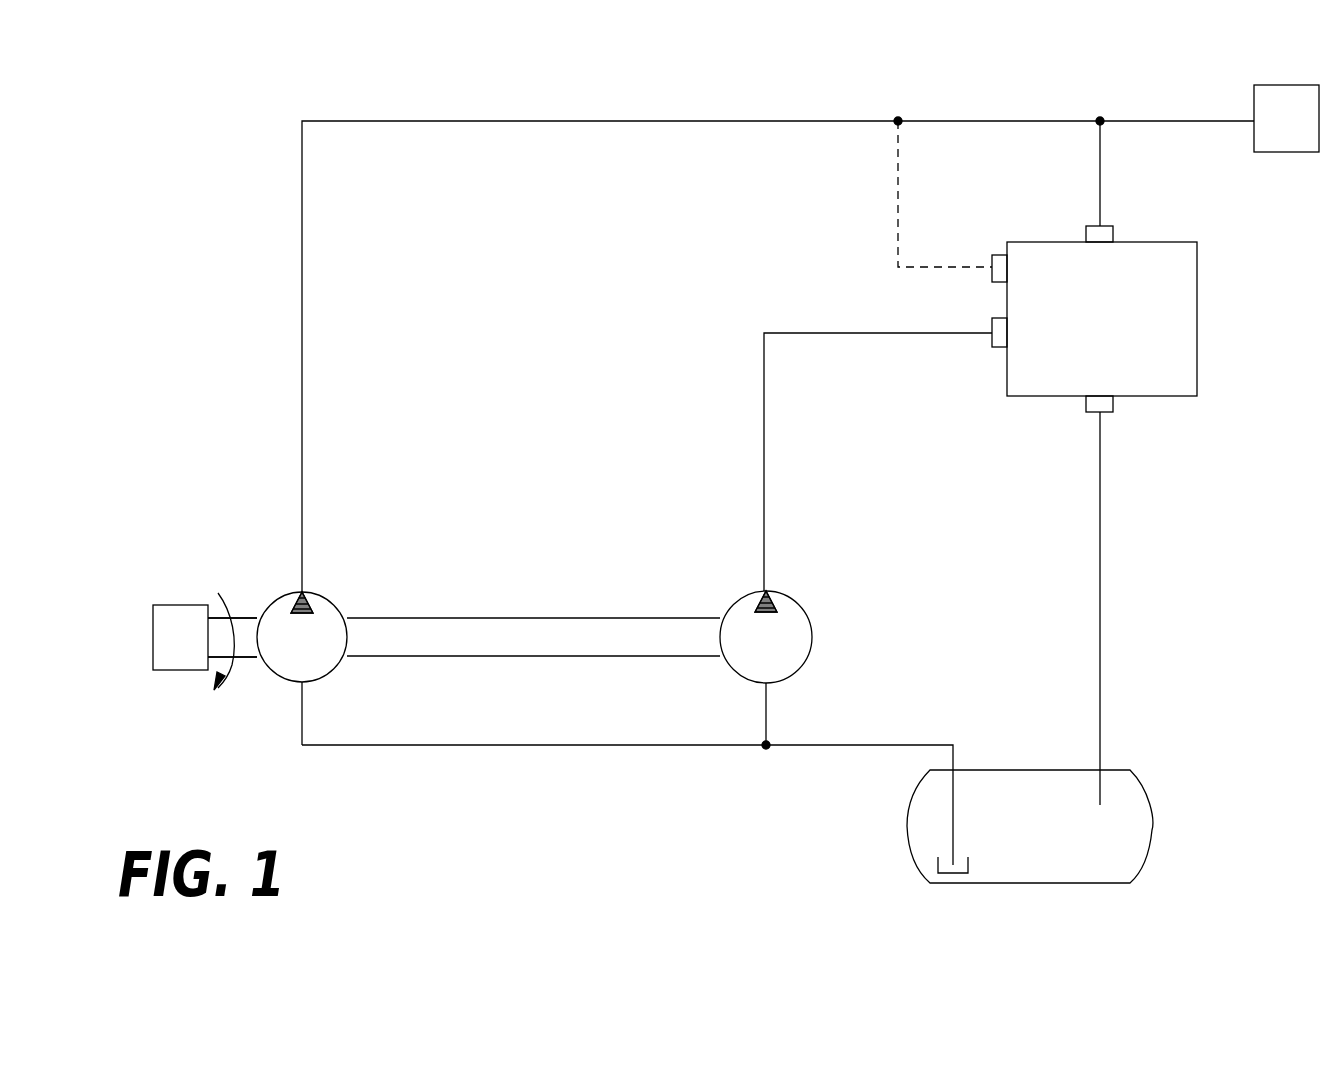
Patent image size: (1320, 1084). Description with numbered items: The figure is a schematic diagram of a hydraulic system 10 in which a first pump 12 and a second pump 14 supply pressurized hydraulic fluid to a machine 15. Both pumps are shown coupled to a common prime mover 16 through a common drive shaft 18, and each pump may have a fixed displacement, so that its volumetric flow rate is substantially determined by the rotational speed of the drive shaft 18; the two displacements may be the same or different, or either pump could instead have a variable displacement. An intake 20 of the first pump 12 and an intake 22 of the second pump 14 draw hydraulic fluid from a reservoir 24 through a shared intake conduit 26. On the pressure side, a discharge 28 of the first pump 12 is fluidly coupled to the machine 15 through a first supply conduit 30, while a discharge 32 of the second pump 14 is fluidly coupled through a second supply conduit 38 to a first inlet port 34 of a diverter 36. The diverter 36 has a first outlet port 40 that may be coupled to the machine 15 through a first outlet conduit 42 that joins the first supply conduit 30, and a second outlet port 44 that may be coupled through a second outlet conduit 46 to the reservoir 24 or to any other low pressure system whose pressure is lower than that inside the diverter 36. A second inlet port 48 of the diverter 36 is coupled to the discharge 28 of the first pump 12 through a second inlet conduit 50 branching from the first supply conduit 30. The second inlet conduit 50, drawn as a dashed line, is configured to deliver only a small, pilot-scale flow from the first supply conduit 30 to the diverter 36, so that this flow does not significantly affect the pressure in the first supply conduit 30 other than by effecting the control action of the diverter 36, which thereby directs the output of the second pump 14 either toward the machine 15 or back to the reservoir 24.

The hydraulic system 10 is at (650, 815).
The first pump 12 is at (322, 597).
The second pump 14 is at (811, 617).
The machine 15 is at (1286, 118).
The prime mover 16 is at (205, 641).
The drive shaft 18 is at (244, 617).
The intake 20 is at (305, 686).
The intake 22 is at (768, 686).
The reservoir 24 is at (1150, 812).
The intake conduit 26 is at (527, 745).
The discharge 28 is at (303, 592).
The first supply conduit 30 is at (303, 262).
The discharge 32 is at (767, 590).
The first inlet port 34 is at (992, 340).
The diverter 36 is at (1102, 319).
The second supply conduit 38 is at (764, 370).
The first outlet port 40 is at (1114, 226).
The first outlet conduit 42 is at (1099, 176).
The second outlet port 44 is at (1114, 410).
The second outlet conduit 46 is at (1102, 625).
The second inlet port 48 is at (992, 262).
The second inlet conduit 50 is at (898, 192).